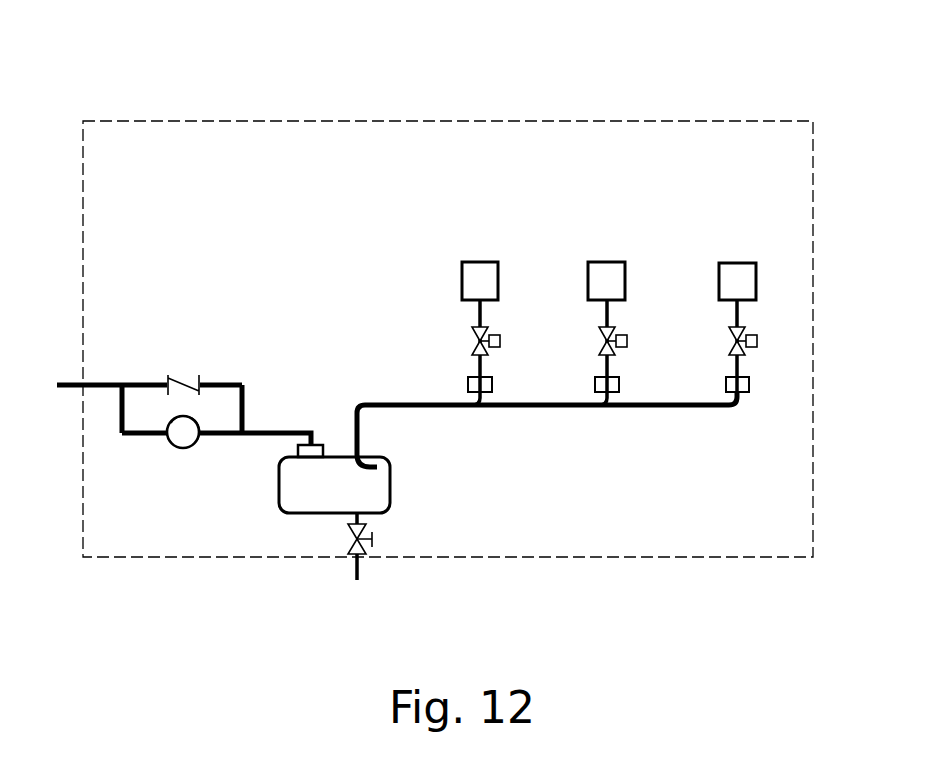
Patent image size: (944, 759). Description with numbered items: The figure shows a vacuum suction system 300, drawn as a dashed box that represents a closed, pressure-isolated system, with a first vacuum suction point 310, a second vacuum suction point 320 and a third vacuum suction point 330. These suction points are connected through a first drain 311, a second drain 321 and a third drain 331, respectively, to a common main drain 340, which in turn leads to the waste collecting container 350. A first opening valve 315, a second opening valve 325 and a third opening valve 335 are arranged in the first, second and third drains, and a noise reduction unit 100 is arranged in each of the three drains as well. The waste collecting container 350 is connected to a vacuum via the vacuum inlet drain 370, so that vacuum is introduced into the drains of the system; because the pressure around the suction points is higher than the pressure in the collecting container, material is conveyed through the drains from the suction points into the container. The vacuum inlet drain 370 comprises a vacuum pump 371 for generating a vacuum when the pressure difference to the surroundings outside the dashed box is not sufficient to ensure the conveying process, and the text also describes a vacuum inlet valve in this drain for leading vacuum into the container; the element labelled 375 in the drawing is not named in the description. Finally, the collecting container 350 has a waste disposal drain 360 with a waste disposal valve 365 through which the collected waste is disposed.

The vacuum suction system 300 is at (152, 96).
The first vacuum suction point 310 is at (459, 277).
The first drain 311 is at (477, 312).
The first opening valve 315 is at (470, 338).
The second vacuum suction point 320 is at (586, 275).
The second drain 321 is at (610, 307).
The second opening valve 325 is at (601, 340).
The third vacuum suction point 330 is at (718, 275).
The third drain 331 is at (740, 317).
The third opening valve 335 is at (733, 335).
The noise reduction unit 100 is at (466, 382).
The main drain 340 is at (533, 411).
The waste collecting container 350 is at (394, 480).
The waste disposal drain 360 is at (362, 568).
The waste disposal valve 365 is at (348, 542).
The vacuum inlet drain 370 is at (72, 383).
The vacuum pump 371 is at (190, 452).
The bypass element 375 is at (190, 367).